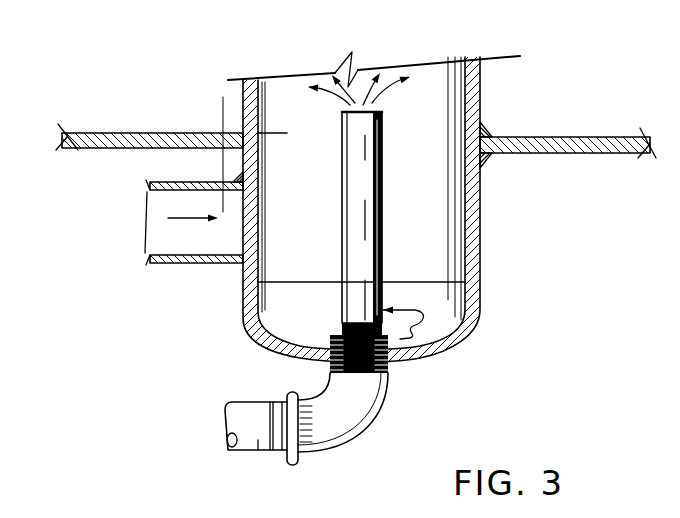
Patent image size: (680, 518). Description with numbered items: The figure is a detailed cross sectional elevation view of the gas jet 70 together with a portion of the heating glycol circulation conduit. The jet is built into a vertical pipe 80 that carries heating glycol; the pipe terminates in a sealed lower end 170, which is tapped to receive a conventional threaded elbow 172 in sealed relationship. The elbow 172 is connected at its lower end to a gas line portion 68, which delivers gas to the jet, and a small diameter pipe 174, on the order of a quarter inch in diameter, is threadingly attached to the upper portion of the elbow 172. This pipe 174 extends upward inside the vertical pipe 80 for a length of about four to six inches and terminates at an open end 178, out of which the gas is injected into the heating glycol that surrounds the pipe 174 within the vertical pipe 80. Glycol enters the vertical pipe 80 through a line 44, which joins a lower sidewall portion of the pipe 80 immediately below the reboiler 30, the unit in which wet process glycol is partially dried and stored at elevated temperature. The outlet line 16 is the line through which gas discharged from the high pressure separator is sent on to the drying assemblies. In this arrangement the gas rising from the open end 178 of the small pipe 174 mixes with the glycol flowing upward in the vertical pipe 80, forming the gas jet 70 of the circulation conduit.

The outlet line 16 is at (243, 133).
The reboiler 30 is at (110, 149).
The line 44 is at (192, 268).
The gas line portion 68 is at (243, 456).
The gas jet 70 is at (460, 340).
The vertical pipe 80 is at (483, 197).
The sealed lower end 170 is at (413, 362).
The threaded elbow 172 is at (317, 458).
The pipe 174 is at (385, 220).
The open end 178 is at (375, 70).